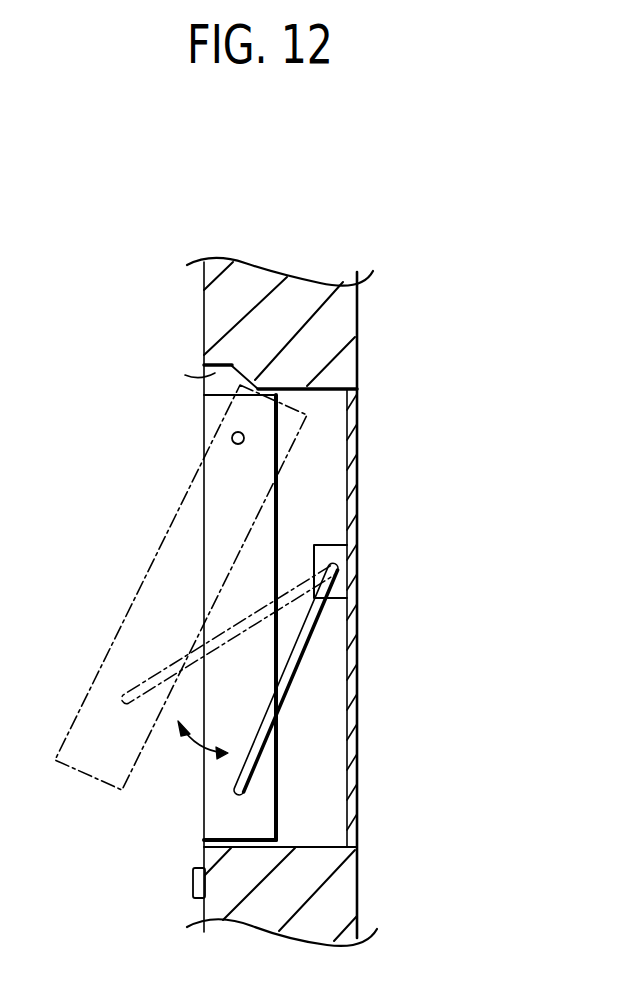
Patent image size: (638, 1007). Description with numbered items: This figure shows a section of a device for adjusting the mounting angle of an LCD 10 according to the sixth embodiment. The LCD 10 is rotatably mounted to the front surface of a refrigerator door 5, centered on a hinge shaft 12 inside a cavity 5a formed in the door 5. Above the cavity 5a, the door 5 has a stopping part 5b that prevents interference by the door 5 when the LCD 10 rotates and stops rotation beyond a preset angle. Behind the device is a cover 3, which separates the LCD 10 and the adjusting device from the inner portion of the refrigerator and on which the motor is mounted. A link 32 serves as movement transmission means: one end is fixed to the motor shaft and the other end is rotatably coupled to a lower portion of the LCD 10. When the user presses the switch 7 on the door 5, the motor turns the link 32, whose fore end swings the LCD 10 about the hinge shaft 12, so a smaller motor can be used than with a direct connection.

The refrigerator door 5 is at (348, 313).
The cavity 5a is at (330, 767).
The stopping part 5b is at (203, 377).
The cover 3 is at (360, 482).
The LCD 10 is at (218, 795).
The hinge shaft 12 is at (232, 436).
The link 32 is at (290, 663).
The switch 7 is at (192, 882).